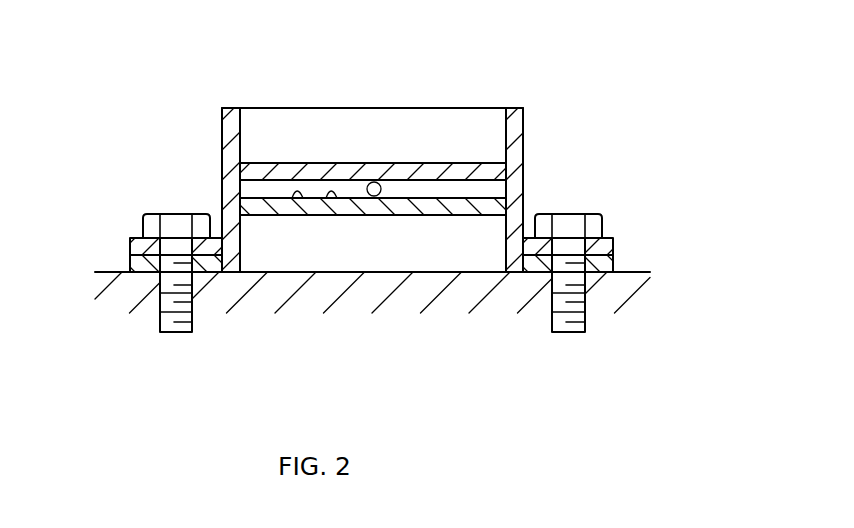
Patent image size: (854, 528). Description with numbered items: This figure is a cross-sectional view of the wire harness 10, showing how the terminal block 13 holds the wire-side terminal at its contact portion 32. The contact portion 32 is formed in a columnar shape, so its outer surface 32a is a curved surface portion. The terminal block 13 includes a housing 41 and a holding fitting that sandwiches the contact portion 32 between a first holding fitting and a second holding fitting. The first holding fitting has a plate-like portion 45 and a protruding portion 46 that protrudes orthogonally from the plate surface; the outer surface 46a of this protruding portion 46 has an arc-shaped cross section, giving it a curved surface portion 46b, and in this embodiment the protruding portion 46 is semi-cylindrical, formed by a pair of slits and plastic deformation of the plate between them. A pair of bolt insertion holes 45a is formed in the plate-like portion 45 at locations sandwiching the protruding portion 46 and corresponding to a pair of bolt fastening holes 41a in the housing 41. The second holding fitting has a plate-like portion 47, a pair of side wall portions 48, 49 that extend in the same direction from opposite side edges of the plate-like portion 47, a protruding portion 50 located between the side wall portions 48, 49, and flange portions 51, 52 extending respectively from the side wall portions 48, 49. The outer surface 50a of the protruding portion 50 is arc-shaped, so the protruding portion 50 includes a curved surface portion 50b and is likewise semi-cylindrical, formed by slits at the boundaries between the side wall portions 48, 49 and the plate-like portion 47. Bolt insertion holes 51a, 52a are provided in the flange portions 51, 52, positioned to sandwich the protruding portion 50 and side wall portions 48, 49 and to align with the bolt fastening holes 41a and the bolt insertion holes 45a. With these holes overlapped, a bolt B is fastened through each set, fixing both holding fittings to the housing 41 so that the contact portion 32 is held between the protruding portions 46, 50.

The wire harness 10 is at (668, 80).
The terminal block 13 is at (118, 278).
The contact portion 32 is at (379, 197).
The outer surface 32a is at (380, 185).
The housing 41 is at (622, 300).
The bolt fastening hole 41a is at (192, 310).
The plate-like portion 45 is at (616, 260).
The bolt insertion hole 45a is at (160, 278).
The protruding portion 46 is at (258, 217).
The outer surface 46a is at (302, 216).
The curved surface portion 46b is at (340, 216).
The plate-like portion 47 is at (455, 107).
The side wall portion 48 is at (229, 112).
The side wall portion 49 is at (514, 112).
The protruding portion 50 is at (282, 172).
The outer surface 50a is at (317, 190).
The curved surface portion 50b is at (355, 186).
The flange portion 51 is at (134, 238).
The bolt insertion hole 51a is at (172, 232).
The flange portion 52 is at (607, 237).
The bolt insertion hole 52a is at (573, 232).
The bolt B is at (173, 329).